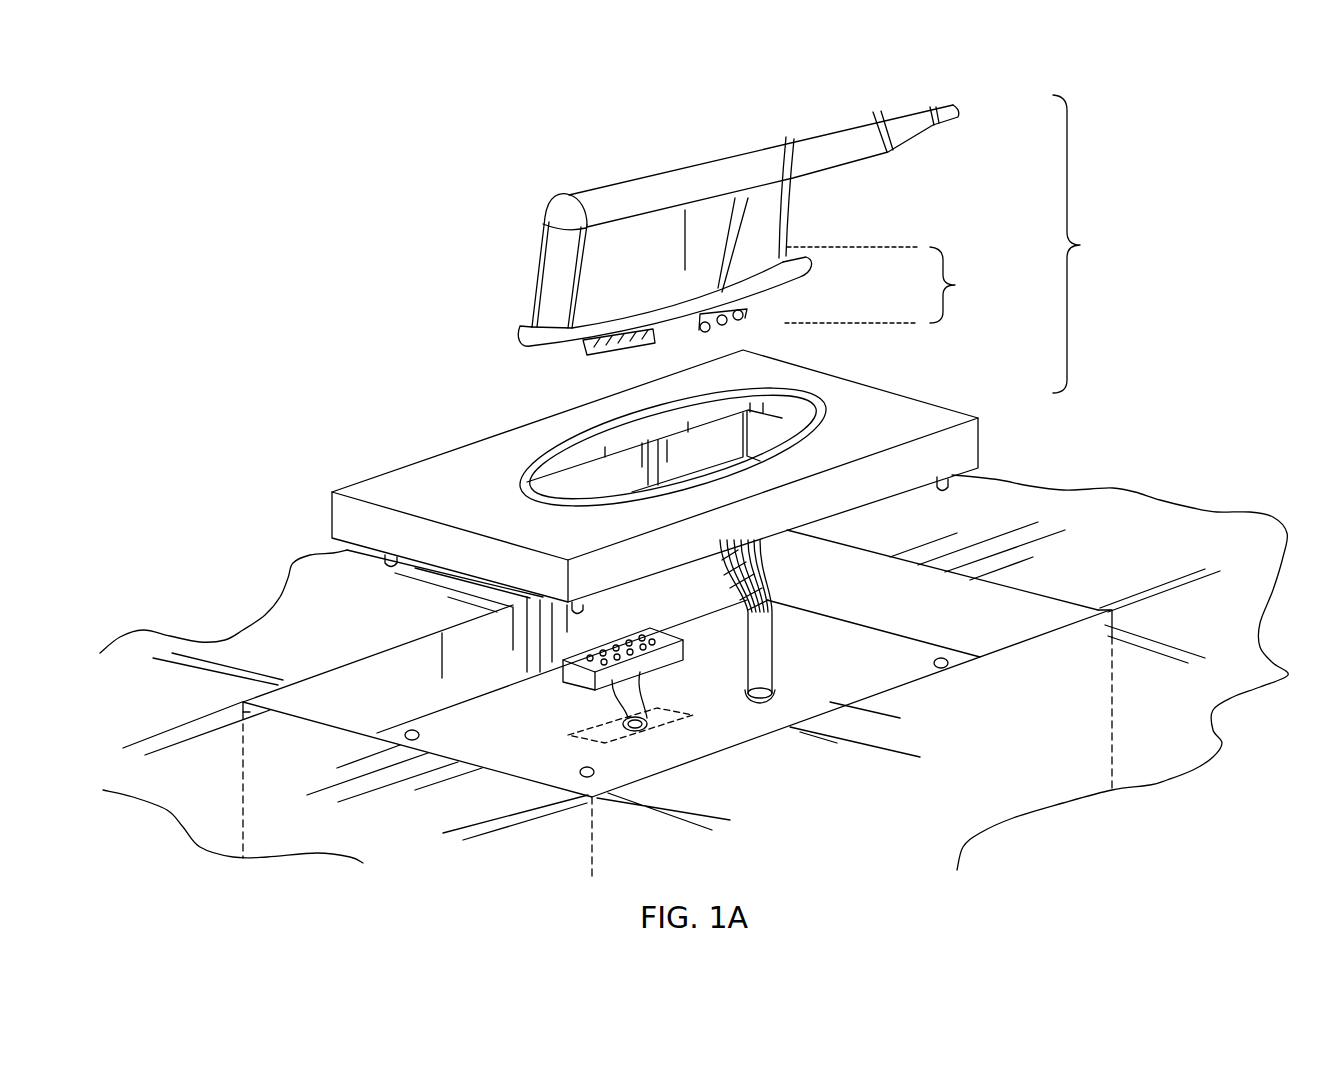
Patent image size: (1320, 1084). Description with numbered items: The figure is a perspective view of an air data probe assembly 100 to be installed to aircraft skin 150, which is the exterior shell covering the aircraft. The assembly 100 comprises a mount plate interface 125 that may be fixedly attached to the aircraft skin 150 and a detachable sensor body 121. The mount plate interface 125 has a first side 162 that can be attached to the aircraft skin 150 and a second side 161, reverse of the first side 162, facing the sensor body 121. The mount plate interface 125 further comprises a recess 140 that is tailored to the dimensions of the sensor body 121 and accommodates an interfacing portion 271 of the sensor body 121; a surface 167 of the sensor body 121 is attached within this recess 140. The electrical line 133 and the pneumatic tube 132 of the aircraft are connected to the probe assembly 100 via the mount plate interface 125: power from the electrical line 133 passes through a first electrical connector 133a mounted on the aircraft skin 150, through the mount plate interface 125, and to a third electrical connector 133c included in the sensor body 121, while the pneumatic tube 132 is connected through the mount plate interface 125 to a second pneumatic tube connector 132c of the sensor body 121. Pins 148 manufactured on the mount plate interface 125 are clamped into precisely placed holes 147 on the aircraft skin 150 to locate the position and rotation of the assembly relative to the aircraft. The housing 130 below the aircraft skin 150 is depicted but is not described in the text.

The air data probe assembly 100 is at (1100, 222).
The sensor body 121 is at (775, 208).
The mount plate interface 125 is at (930, 418).
The base housing 130 is at (312, 720).
The pneumatic tube 132 is at (767, 673).
The second pneumatic tube connector 132c is at (747, 302).
The electrical line 133 is at (640, 687).
The first electrical connector 133a is at (573, 682).
The third electrical connector 133c is at (585, 356).
The recess 140 is at (828, 403).
The holes 147 is at (941, 668).
The pins 148 is at (386, 558).
The aircraft skin 150 is at (1158, 503).
The second side 161 is at (386, 498).
The first side 162 is at (408, 563).
The surface of sensor body 167 is at (808, 265).
The interfacing portion 271 is at (958, 285).